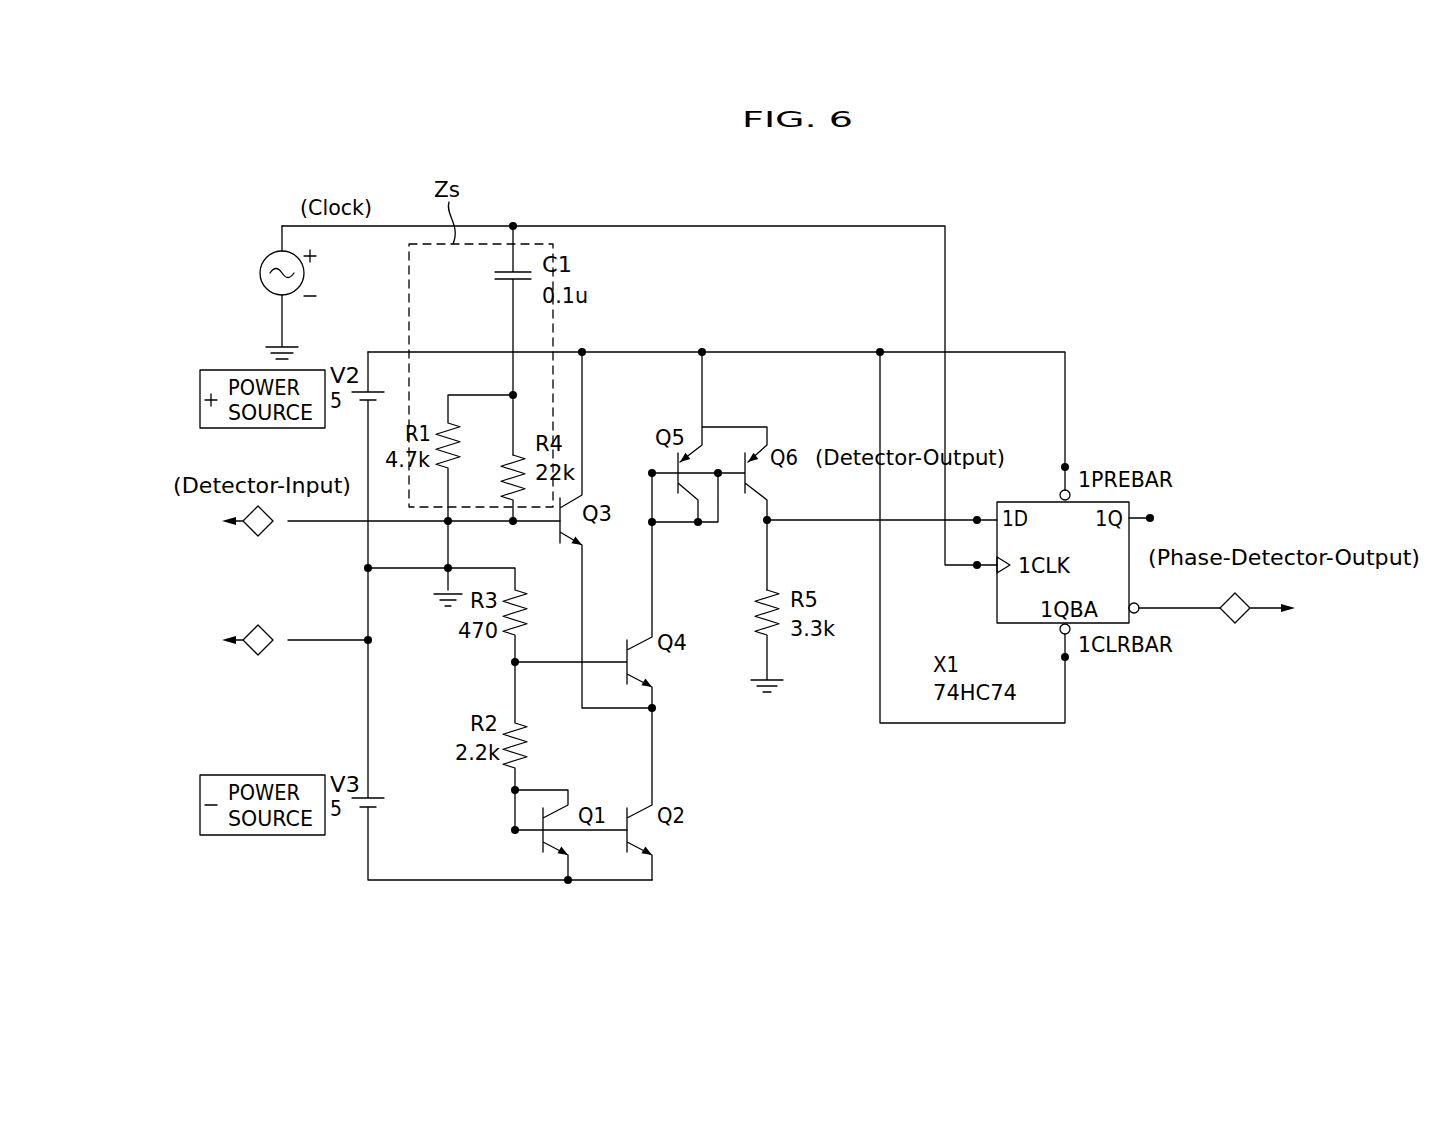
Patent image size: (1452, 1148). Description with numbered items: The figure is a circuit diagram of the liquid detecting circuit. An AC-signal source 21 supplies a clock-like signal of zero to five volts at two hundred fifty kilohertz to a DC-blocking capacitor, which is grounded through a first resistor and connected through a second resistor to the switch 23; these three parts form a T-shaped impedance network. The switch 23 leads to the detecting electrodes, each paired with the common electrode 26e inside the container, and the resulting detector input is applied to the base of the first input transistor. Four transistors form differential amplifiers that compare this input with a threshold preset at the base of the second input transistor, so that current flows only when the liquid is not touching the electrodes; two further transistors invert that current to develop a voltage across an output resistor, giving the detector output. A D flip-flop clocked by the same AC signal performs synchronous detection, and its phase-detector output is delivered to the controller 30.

The AC-signal source 21 is at (266, 257).
The switch 23 is at (206, 526).
The common electrode 26e is at (250, 654).
The controller 30 is at (1284, 611).